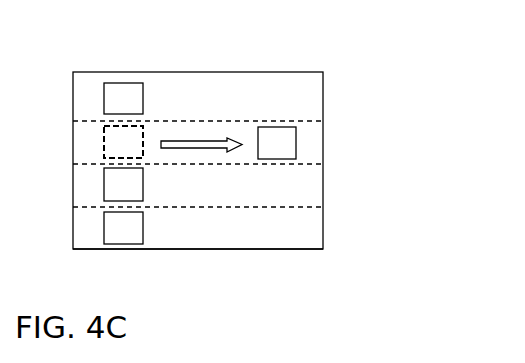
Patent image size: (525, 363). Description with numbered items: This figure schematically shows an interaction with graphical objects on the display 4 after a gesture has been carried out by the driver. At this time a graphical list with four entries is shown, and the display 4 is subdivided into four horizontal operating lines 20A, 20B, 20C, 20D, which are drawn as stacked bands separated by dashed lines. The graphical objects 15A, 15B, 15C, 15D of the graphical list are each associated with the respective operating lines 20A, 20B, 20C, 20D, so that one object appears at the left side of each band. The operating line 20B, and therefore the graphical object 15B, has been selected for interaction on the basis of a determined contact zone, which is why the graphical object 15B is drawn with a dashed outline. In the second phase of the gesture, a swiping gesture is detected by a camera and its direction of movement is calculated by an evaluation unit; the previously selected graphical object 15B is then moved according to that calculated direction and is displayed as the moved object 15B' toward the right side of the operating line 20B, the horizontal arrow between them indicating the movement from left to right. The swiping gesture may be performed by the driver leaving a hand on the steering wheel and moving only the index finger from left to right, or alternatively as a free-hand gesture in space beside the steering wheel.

The display 4 is at (296, 59).
The graphical object 15A is at (119, 99).
The graphical object 15B is at (79, 142).
The moved object 15B' is at (324, 144).
The graphical object 15C is at (117, 185).
The graphical object 15D is at (116, 228).
The operating line 20A is at (307, 99).
The operating line 20B is at (307, 127).
The operating line 20C is at (303, 177).
The operating line 20D is at (302, 233).